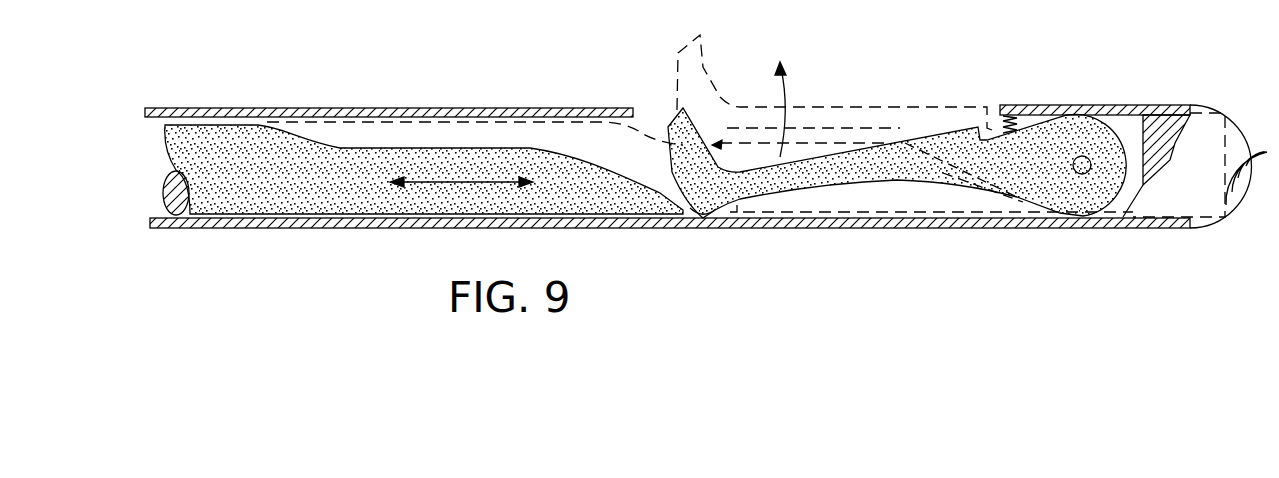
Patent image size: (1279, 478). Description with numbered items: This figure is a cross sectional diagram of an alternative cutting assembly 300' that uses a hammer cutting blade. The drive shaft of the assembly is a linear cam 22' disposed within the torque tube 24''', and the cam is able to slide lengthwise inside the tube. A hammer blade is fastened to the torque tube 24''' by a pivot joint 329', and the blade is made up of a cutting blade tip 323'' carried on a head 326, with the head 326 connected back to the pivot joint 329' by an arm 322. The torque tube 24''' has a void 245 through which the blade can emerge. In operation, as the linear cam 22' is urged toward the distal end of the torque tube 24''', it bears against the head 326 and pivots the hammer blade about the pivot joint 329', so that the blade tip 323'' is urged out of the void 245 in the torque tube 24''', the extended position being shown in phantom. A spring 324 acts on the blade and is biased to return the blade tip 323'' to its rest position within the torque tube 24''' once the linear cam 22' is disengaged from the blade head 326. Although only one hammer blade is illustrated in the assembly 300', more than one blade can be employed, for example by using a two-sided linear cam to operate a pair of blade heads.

The torque tube 24''' is at (389, 87).
The linear cam 22' is at (423, 204).
The void 245 is at (655, 104).
The cutting blade tip 323'' is at (897, 120).
The arm 322 is at (918, 138).
The head 326 is at (737, 207).
The spring 324 is at (1017, 122).
The pivot joint 329' is at (1113, 219).
The cutting assembly 300' is at (1134, 123).